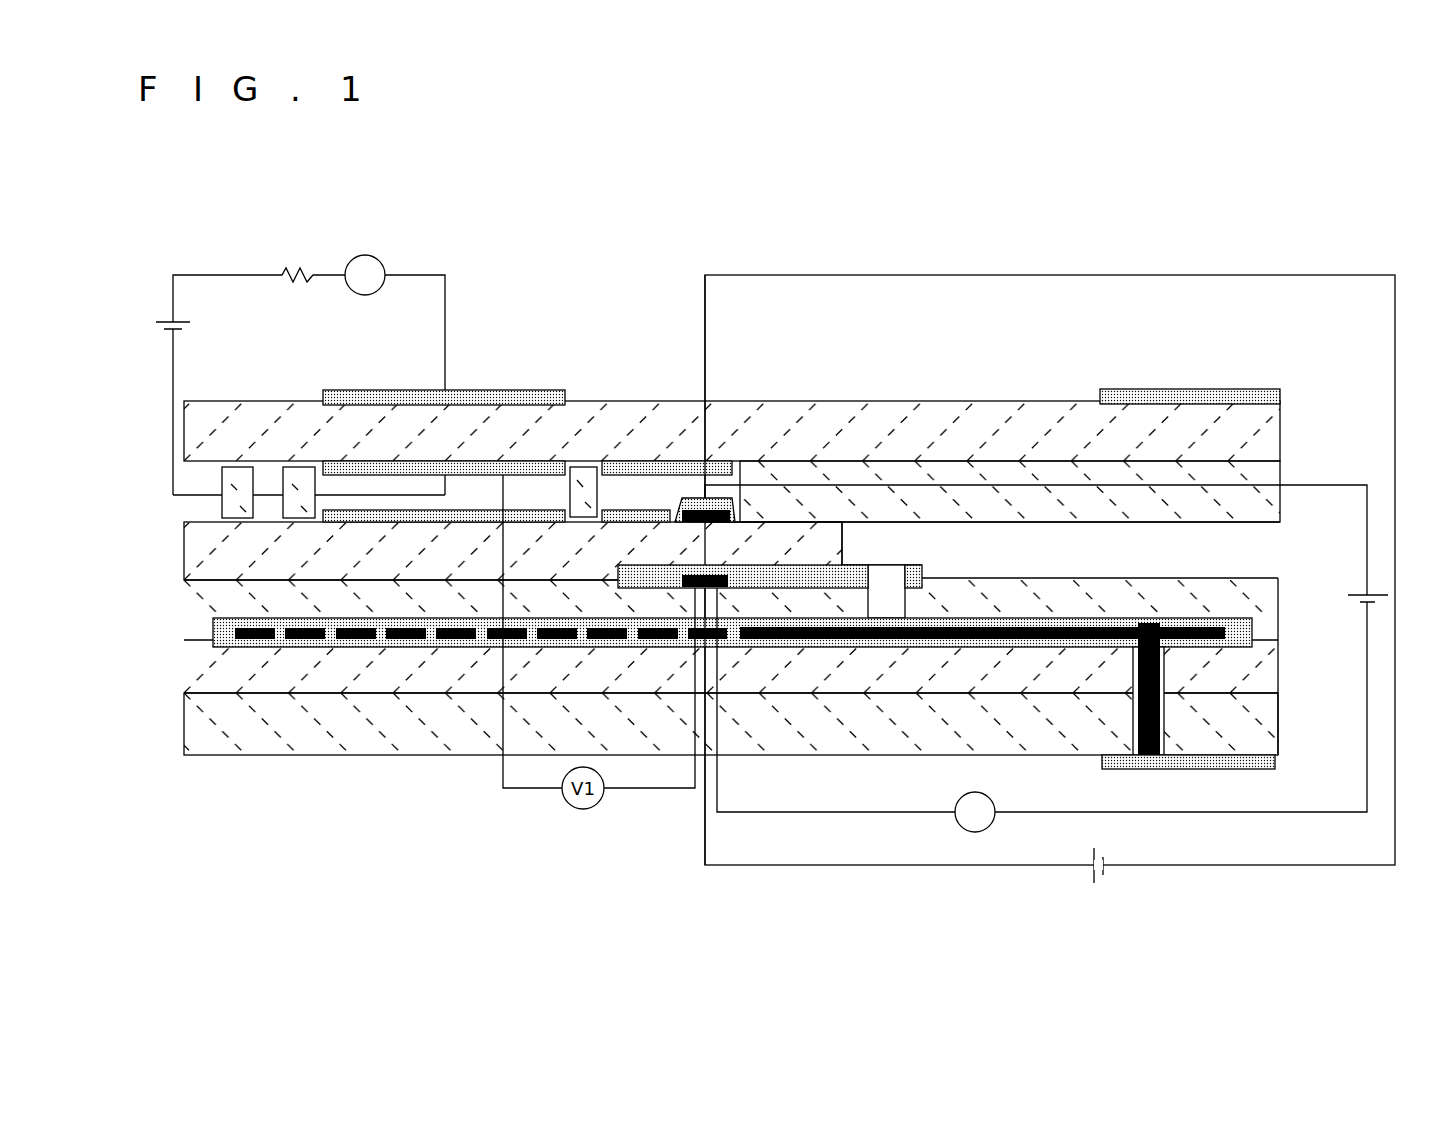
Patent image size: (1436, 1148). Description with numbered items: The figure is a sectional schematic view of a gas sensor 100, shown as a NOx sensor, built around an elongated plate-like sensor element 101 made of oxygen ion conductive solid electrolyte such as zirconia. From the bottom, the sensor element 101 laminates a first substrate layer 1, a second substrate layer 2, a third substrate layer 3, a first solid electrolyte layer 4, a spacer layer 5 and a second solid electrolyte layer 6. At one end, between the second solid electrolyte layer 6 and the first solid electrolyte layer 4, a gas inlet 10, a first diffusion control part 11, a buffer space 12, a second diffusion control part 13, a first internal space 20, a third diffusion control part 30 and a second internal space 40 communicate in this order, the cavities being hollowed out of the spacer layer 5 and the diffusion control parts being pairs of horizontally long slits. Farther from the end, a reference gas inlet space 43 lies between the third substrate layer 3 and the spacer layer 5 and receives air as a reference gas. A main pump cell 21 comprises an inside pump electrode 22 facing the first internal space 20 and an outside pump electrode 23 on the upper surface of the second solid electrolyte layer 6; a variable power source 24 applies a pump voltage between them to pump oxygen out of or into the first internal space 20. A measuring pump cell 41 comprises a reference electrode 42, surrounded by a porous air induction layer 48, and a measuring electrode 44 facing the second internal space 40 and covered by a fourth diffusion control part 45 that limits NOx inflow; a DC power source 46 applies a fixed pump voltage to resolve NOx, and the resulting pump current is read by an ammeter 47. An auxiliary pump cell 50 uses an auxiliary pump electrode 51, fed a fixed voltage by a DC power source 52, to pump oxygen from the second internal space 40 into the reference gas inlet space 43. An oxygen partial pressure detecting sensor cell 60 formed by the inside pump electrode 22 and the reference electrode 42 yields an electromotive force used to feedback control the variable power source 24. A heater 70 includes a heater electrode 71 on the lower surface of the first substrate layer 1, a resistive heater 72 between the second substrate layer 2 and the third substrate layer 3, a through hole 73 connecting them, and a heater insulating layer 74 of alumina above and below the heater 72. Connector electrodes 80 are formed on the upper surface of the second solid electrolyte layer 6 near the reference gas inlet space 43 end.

The gas sensor 100 is at (308, 233).
The sensor element 101 is at (885, 399).
The first substrate layer 1 is at (1267, 723).
The second substrate layer 2 is at (1267, 668).
The third substrate layer 3 is at (1267, 610).
The first solid electrolyte layer 4 is at (197, 563).
The spacer layer 5 is at (1268, 470).
The second solid electrolyte layer 6 is at (1268, 433).
The gas inlet 10 is at (198, 505).
The first diffusion control part 11 is at (237, 472).
The buffer space 12 is at (273, 477).
The second diffusion control part 13 is at (305, 470).
The first internal space 20 is at (392, 507).
The main pump cell 21 is at (363, 375).
The inside pump electrode 22 is at (467, 460).
The outside pump electrode 23 is at (347, 390).
The variable power source 24 is at (186, 330).
The third diffusion control part 30 is at (582, 477).
The second internal space 40 is at (612, 493).
The measuring pump cell 41 is at (1048, 658).
The reference electrode 42 is at (683, 590).
The reference gas inlet space 43 is at (1268, 546).
The measuring electrode 44 is at (683, 527).
The fourth diffusion control part 45 is at (679, 522).
The DC power source 46 is at (1358, 595).
The ammeter 47 is at (977, 792).
The air induction layer 48 is at (770, 579).
The auxiliary pump cell 50 is at (640, 440).
The auxiliary pump electrode 51 is at (668, 462).
The DC power source 52 is at (1107, 873).
The oxygen partial pressure detecting sensor cell 60 is at (477, 553).
The heater 70 is at (731, 763).
The heater electrode 71 is at (1130, 760).
The heater 72 is at (262, 640).
The through hole 73 is at (1163, 720).
The heater insulating layer 74 is at (222, 640).
The connector electrodes 80 is at (1160, 395).